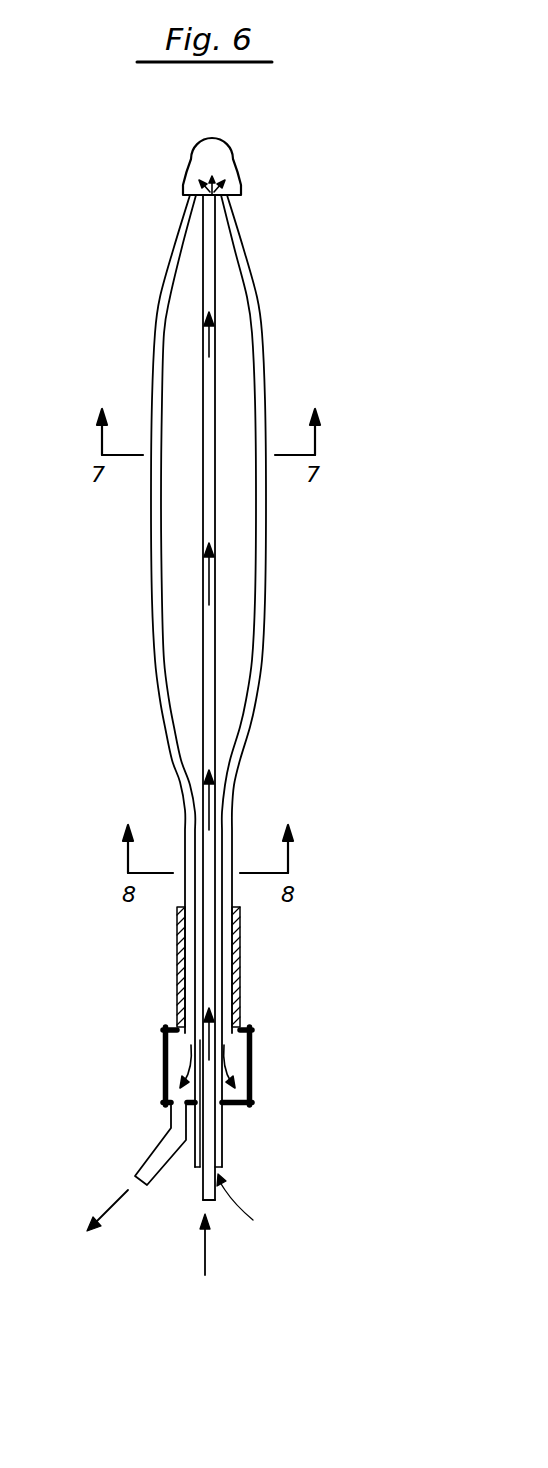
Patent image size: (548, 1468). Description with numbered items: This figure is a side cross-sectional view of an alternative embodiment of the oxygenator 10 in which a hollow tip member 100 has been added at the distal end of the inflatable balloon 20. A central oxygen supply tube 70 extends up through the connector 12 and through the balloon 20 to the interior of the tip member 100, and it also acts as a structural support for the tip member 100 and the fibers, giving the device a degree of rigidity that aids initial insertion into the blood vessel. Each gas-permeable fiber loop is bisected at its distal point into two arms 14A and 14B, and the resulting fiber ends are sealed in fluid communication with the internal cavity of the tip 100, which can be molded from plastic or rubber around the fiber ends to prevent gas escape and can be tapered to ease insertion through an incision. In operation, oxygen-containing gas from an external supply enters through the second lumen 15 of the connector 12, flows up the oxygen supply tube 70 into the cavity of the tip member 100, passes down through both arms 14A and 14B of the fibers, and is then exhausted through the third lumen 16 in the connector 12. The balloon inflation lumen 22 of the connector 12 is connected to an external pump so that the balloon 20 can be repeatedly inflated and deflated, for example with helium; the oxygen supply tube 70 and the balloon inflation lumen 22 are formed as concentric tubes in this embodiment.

The oxygenator 10 is at (301, 619).
The connector 12 is at (252, 1037).
The arm of fiber loop 14A is at (162, 265).
The arm of fiber loop 14B is at (265, 313).
The second lumen 15 is at (200, 1190).
The third lumen 16 is at (153, 1153).
The inflatable balloon 20 is at (237, 283).
The balloon inflation lumen 22 is at (218, 843).
The central oxygen supply tube 70 is at (211, 258).
The hollow tip member 100 is at (222, 160).